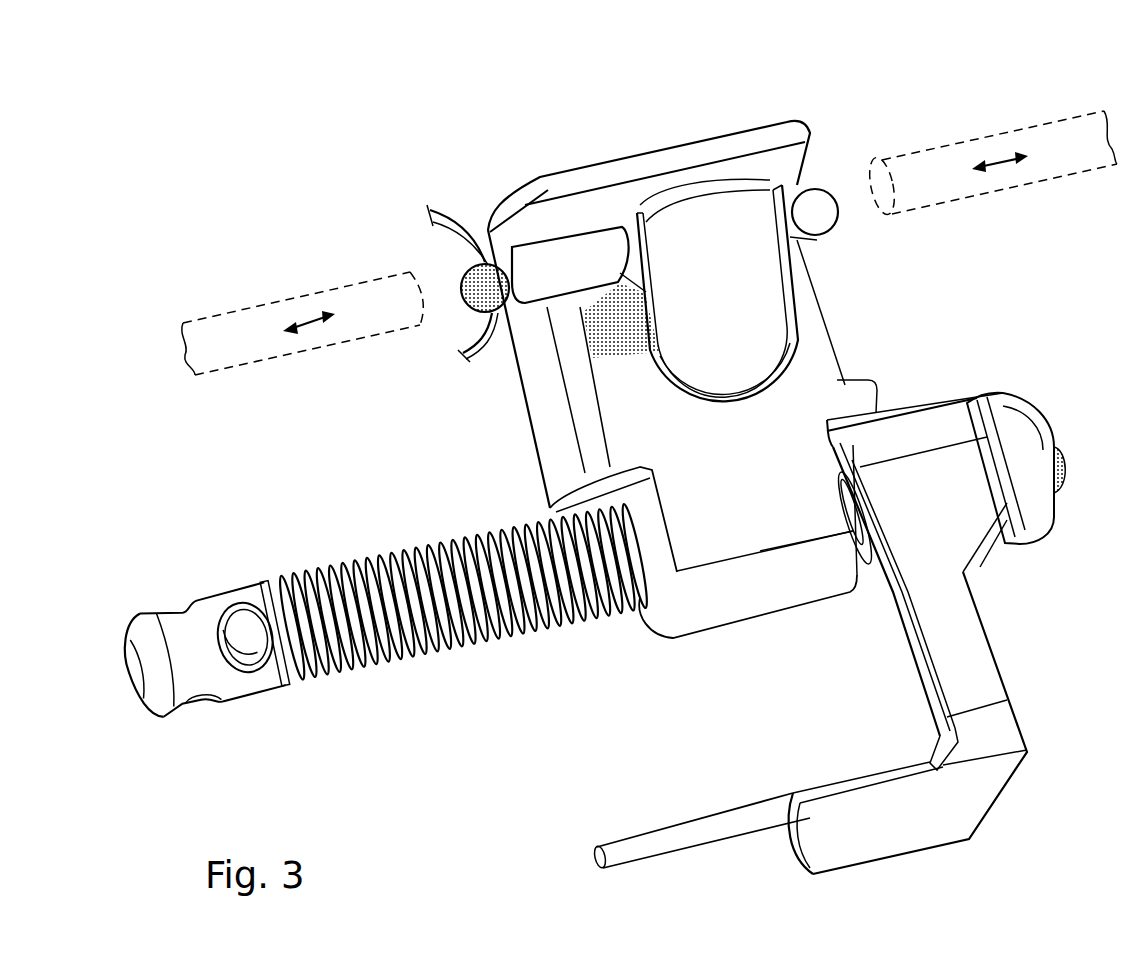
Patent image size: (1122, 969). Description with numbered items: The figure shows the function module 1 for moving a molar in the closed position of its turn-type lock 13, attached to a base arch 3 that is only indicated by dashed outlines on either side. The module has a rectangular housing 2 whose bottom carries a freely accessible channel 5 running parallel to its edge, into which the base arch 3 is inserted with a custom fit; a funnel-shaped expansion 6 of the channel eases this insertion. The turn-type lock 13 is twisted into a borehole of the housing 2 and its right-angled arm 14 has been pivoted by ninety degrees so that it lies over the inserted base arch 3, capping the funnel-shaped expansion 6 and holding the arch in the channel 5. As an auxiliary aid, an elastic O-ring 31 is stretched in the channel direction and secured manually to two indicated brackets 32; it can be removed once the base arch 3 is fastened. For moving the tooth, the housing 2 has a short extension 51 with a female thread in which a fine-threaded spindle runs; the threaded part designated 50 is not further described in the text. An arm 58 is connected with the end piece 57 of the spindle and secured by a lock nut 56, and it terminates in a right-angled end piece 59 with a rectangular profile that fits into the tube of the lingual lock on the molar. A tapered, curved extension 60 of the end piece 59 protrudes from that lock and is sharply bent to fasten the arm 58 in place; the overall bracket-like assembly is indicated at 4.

The function module 1 is at (283, 109).
The housing 2 is at (550, 455).
The base arch 3 is at (248, 320).
The bracket 4 is at (1034, 629).
The channel 5 is at (800, 190).
The funnel-shaped expansion 6 is at (797, 150).
The turn-type lock 13 is at (748, 293).
The arm 14 is at (709, 199).
The O-ring 31 is at (472, 215).
The brackets 32 is at (483, 288).
The threaded spindle 50 is at (383, 612).
The short extension 51 is at (748, 592).
The lock nut 56 is at (1012, 432).
The end piece 57 is at (947, 432).
The arm 58 is at (942, 632).
The end piece 59 is at (948, 812).
The tapered, curved extension 60 is at (645, 848).